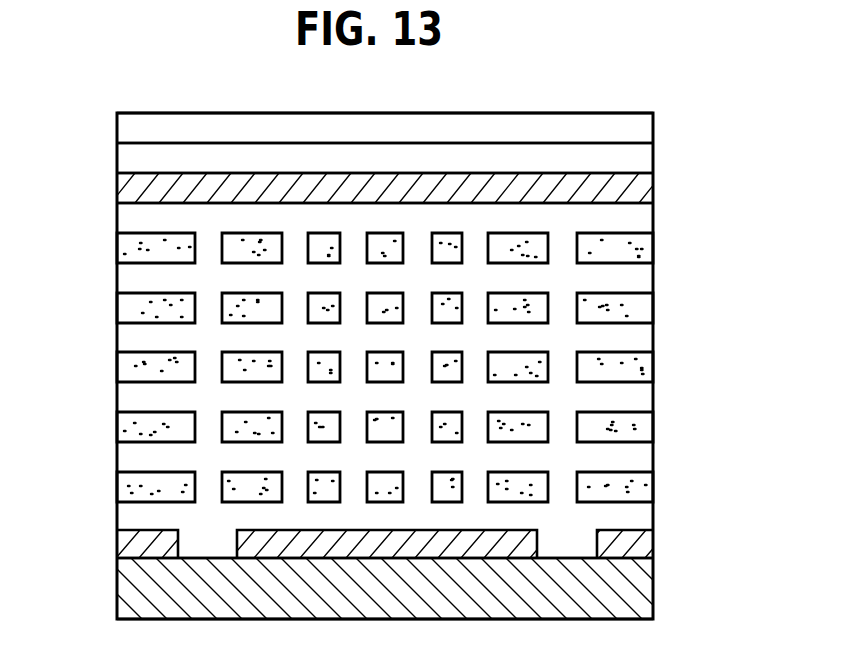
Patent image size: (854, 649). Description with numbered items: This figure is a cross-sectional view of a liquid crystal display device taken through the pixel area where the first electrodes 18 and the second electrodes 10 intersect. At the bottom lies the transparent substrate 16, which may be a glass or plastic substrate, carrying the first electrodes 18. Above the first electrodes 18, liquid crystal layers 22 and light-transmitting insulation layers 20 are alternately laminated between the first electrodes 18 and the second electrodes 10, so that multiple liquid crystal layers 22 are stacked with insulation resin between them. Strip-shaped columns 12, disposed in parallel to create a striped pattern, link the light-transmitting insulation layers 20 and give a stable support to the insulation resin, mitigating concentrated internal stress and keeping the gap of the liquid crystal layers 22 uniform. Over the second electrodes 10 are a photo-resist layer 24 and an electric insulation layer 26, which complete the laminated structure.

The second electrodes 10 is at (640, 192).
The columns 12 is at (130, 340).
The transparent substrate 16 is at (640, 592).
The first electrodes 18 is at (640, 543).
The light-transmitting insulation layer 20 is at (640, 225).
The liquid crystal layers 22 is at (640, 255).
The photo-resist layer 24 is at (640, 165).
The electric insulation layer 26 is at (640, 135).